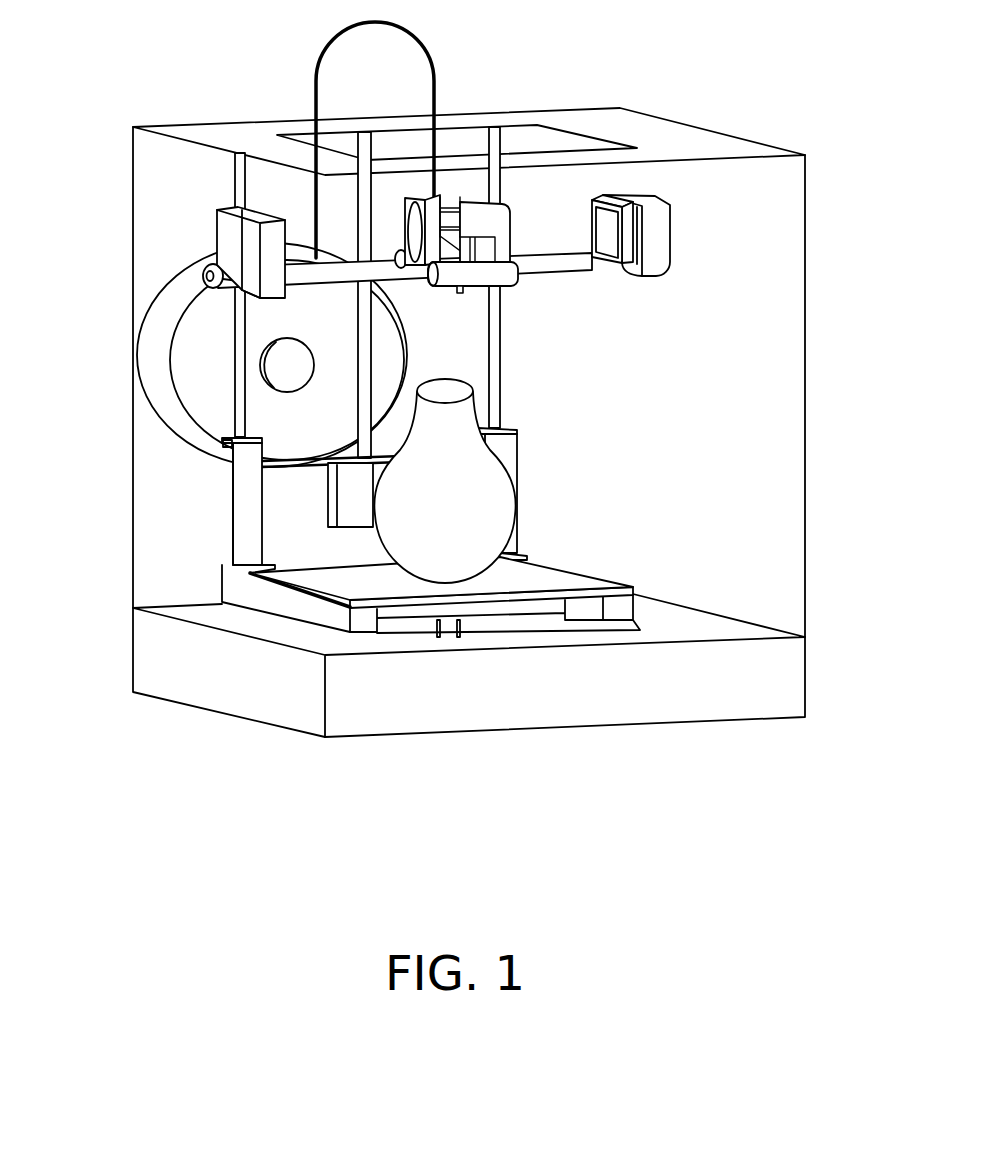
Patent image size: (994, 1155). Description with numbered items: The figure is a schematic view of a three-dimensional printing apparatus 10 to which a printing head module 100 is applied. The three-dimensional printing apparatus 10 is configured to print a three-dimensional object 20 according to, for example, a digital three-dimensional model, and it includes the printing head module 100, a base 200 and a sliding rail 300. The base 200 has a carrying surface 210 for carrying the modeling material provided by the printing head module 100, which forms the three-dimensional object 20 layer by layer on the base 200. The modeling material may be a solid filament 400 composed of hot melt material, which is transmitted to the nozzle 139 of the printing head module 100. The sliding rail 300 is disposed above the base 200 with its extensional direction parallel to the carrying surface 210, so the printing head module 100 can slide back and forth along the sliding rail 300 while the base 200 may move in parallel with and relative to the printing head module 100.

The three-dimensional printing apparatus 10 is at (857, 802).
The 3-D object 20 is at (407, 508).
The printing head module 100 is at (492, 220).
The nozzle 139 is at (462, 294).
The base 200 is at (577, 582).
The carrying surface 210 is at (551, 575).
The sliding rail 300 is at (577, 278).
The solid filament 400 is at (436, 72).